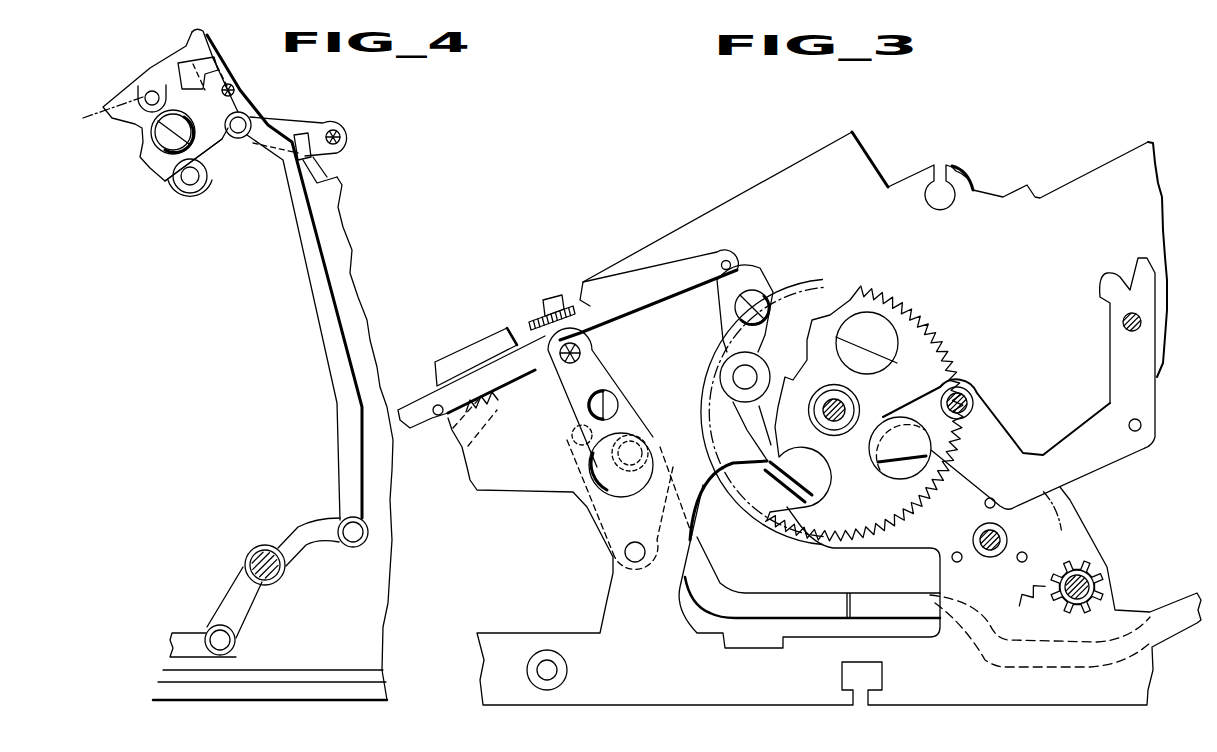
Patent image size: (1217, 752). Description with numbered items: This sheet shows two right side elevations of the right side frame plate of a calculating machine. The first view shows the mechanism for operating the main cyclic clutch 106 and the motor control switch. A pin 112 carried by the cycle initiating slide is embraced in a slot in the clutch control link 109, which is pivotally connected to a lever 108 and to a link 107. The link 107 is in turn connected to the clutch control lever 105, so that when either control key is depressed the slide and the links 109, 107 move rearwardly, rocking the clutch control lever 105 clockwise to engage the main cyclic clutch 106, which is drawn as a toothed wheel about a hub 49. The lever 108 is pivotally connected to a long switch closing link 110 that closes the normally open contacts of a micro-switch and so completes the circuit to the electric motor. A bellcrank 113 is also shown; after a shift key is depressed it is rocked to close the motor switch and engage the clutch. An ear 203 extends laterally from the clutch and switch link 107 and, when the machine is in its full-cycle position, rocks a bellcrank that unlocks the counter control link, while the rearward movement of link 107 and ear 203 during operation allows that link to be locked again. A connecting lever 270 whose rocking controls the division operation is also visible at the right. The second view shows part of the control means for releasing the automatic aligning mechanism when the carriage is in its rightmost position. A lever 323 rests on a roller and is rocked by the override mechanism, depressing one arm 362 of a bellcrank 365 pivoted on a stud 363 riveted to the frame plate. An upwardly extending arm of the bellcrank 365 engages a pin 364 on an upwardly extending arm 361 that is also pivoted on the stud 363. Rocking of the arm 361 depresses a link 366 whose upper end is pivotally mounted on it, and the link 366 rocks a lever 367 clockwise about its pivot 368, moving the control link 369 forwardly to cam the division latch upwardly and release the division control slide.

In FIG. 3, the shaft hub 49 is at (838, 408).
In FIG. 3, the clutch control lever 105 is at (745, 266).
In FIG. 3, the main cyclic clutch 106 is at (793, 320).
In FIG. 3, the link 107 is at (672, 277).
In FIG. 3, the lever 108 is at (582, 393).
In FIG. 3, the clutch control link 109 is at (505, 368).
In FIG. 3, the switch closing link 110 is at (768, 602).
In FIG. 3, the pin 112 is at (441, 415).
In FIG. 3, the bellcrank 113 is at (591, 517).
In FIG. 3, the ear 203 is at (548, 300).
In FIG. 3, the connecting lever 270 is at (1140, 397).
In FIG. 4, the lever 323 is at (338, 146).
In FIG. 4, the arm 361 is at (222, 155).
In FIG. 4, the arm 362 is at (297, 147).
In FIG. 4, the stud 363 is at (205, 183).
In FIG. 4, the pin 364 is at (233, 87).
In FIG. 4, the bellcrank 365 is at (210, 117).
In FIG. 4, the link 366 is at (343, 375).
In FIG. 4, the lever 367 is at (322, 527).
In FIG. 4, the pivot 368 is at (276, 573).
In FIG. 4, the control link 369 is at (200, 640).